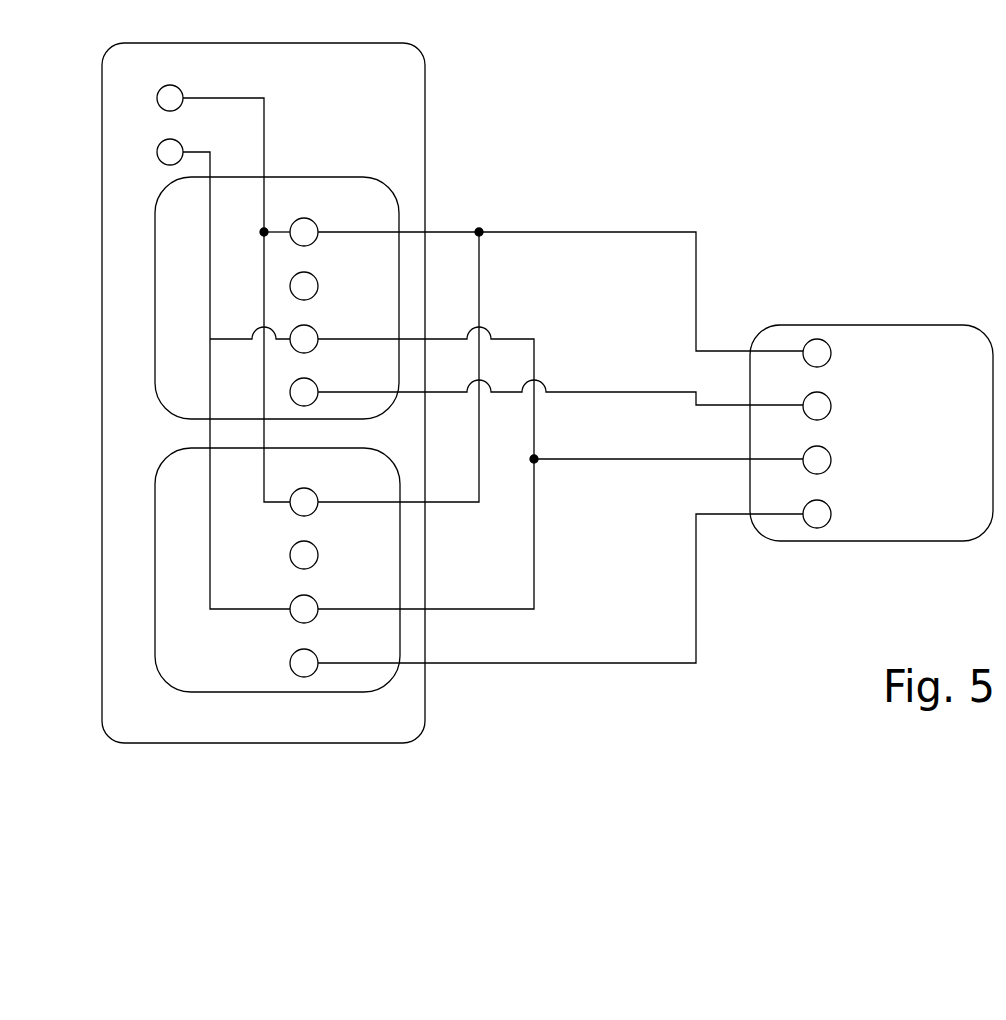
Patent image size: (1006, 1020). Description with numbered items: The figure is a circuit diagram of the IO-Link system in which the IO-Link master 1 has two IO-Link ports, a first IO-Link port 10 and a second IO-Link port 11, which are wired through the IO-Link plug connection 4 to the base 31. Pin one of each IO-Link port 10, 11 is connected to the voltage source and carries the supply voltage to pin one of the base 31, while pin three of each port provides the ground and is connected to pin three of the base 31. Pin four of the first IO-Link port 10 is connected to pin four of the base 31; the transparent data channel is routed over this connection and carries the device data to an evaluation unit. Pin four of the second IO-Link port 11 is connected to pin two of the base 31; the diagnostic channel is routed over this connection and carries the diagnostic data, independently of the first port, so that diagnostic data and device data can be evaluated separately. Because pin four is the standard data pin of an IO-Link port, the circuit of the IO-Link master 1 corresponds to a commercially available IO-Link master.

The IO-Link master 1 is at (425, 143).
The second IO-Link port 11 is at (155, 240).
The first IO-Link port 10 is at (155, 535).
The IO-Link plug connection 4 is at (672, 190).
The base 31 is at (943, 325).